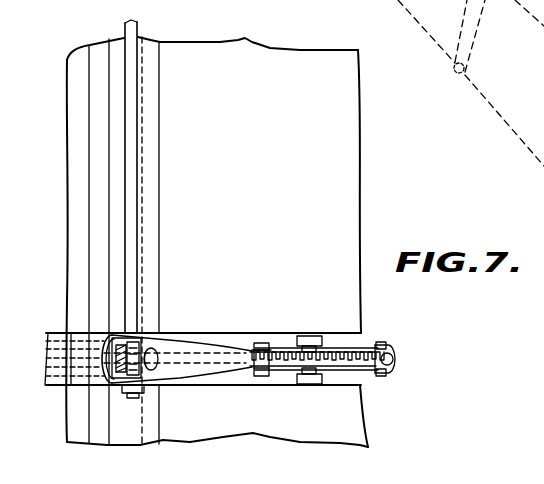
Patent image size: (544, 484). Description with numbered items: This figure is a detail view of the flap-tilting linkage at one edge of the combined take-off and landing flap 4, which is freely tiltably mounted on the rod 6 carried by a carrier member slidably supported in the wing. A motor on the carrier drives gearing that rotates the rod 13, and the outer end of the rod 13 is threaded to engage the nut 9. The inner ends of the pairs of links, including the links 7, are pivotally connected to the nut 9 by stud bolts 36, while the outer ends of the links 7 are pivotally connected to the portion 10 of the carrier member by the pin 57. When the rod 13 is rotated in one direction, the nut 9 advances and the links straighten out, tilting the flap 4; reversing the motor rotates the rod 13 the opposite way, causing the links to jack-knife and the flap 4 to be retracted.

The combined take-off and landing flap 4 is at (242, 52).
The rod 6 is at (130, 187).
The links 7 is at (277, 345).
The nut 9 is at (395, 357).
The portion of member 5 10 is at (208, 328).
The rod 13 is at (228, 370).
The stud bolts 36 is at (383, 345).
The pin 57 is at (252, 361).